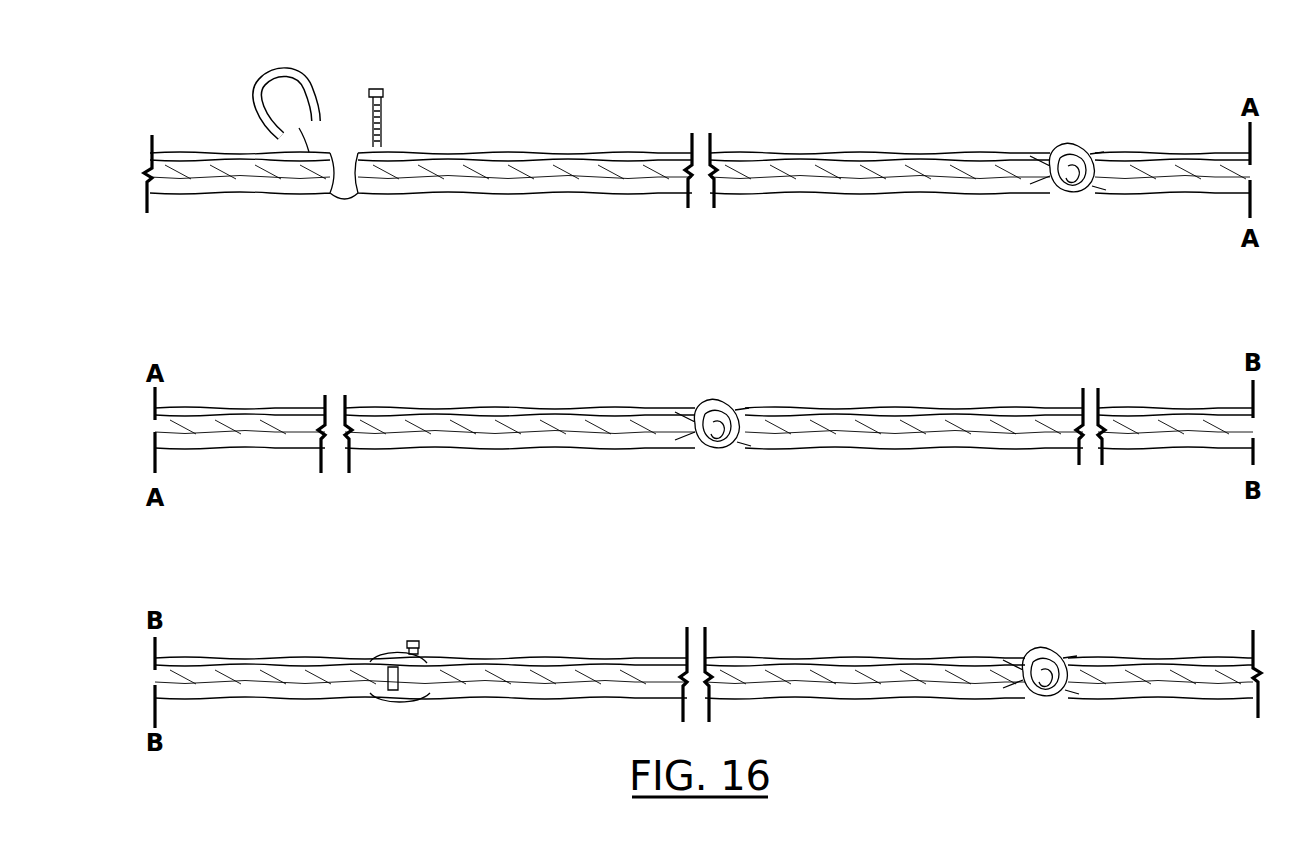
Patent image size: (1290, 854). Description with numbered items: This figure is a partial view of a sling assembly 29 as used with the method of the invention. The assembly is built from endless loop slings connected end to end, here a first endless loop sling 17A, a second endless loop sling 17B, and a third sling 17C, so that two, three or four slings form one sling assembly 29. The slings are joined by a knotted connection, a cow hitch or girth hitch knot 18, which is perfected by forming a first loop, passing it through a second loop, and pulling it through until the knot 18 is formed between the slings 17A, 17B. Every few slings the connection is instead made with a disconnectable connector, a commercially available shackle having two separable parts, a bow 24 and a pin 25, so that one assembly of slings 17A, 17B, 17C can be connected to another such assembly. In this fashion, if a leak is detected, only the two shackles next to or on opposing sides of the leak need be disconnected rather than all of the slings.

The endless loop sling 17A is at (751, 184).
The endless loop sling 17B is at (1205, 183).
The third sling 17C is at (249, 184).
The knot 18 is at (1075, 150).
The bow 24 is at (278, 77).
The pin 25 is at (383, 119).
The sling assembly 29 is at (900, 184).